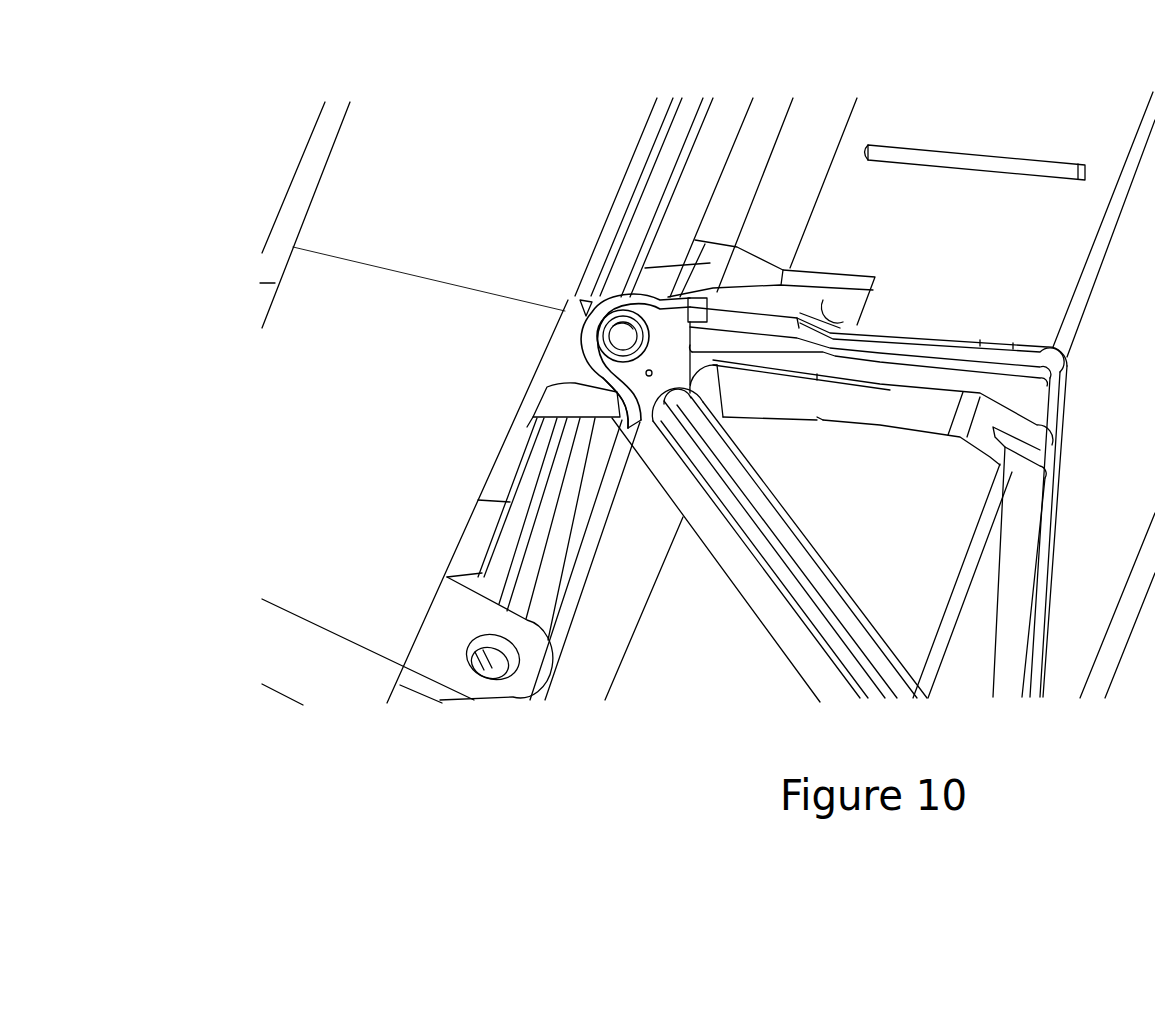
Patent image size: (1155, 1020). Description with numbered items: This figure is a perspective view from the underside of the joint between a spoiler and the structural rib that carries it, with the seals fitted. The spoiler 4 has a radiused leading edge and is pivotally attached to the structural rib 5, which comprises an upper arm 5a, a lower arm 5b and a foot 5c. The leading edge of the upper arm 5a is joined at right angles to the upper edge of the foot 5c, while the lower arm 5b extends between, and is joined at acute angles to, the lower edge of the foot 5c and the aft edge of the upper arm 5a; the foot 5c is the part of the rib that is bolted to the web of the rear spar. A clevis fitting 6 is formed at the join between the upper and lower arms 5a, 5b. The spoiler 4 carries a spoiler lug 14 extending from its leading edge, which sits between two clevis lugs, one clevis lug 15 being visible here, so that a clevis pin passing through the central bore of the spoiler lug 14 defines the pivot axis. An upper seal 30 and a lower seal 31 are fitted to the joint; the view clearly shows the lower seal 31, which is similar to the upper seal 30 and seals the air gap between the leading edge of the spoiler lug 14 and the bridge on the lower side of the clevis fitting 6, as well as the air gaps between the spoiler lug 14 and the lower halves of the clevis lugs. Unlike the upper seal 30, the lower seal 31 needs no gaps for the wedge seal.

The spoiler 4 is at (383, 330).
The structural rib 5 is at (852, 525).
The upper arm 5a is at (900, 390).
The lower arm 5b is at (753, 570).
The foot 5c is at (1022, 548).
The clevis fitting 6 is at (572, 305).
The spoiler lug 14 is at (570, 375).
The clevis lug 15 is at (645, 318).
The upper seal 30 is at (608, 298).
The lower seal 31 is at (621, 420).